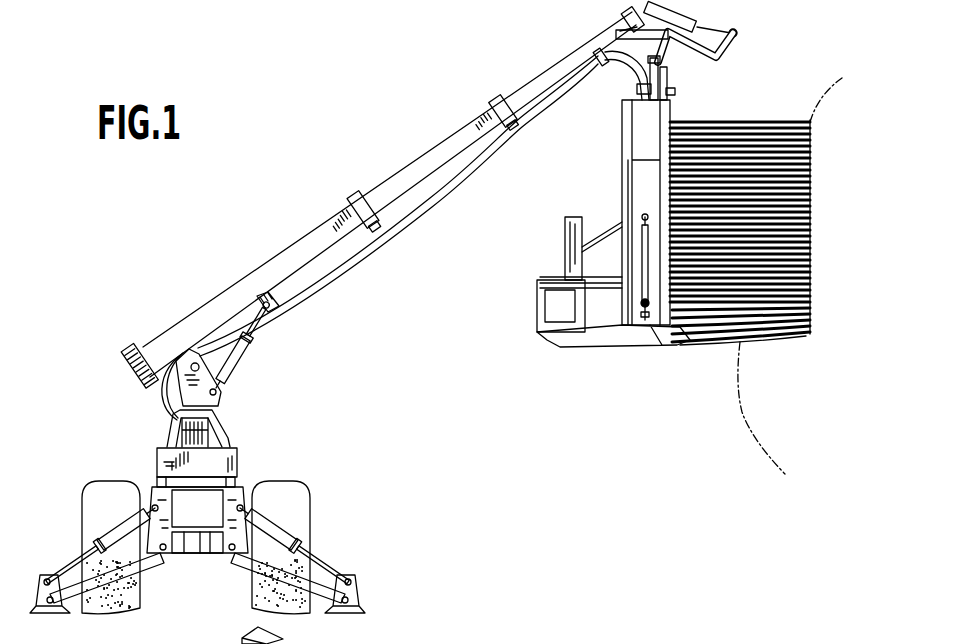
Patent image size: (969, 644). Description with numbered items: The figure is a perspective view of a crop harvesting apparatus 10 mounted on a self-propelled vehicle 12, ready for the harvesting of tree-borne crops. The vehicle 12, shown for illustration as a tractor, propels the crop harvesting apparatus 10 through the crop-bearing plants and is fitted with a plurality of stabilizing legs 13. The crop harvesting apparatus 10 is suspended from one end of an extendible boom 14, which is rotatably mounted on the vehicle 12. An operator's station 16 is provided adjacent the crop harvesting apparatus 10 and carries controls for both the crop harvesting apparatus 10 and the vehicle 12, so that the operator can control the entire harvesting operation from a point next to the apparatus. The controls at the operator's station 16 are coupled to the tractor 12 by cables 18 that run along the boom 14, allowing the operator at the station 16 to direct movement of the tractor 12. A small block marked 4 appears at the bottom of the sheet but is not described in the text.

The crop harvesting apparatus 10 is at (737, 122).
The self-propelled vehicle 12 is at (238, 450).
The stabilizing legs 13 is at (230, 572).
The extendible boom 14 is at (337, 213).
The operator's station 16 is at (566, 251).
The cables 18 is at (413, 215).
The ground block 4 is at (317, 635).